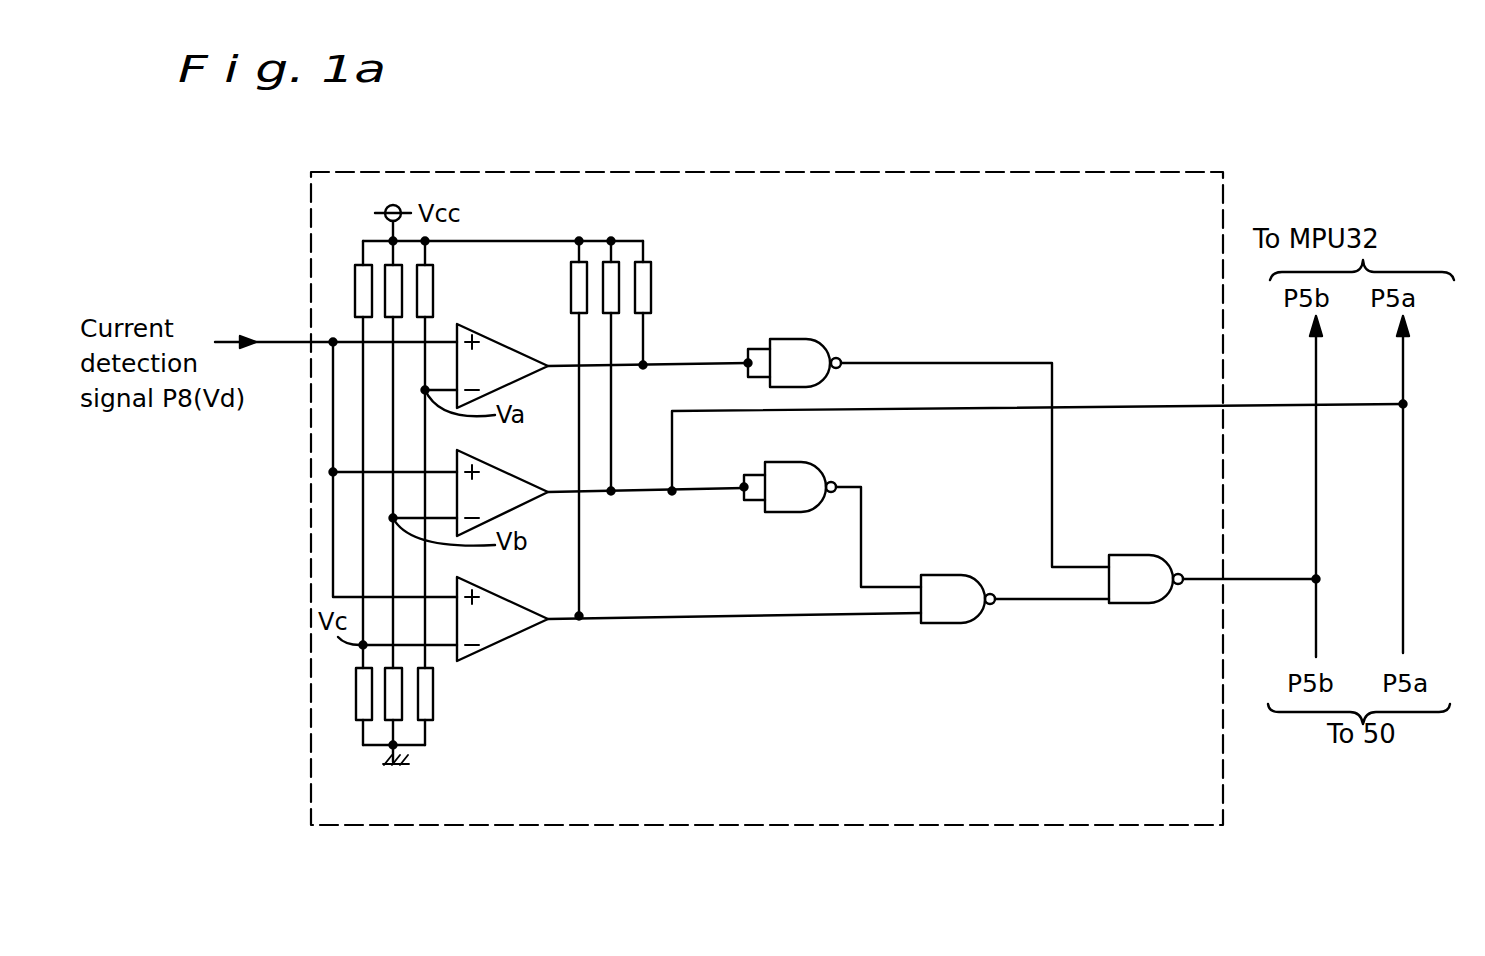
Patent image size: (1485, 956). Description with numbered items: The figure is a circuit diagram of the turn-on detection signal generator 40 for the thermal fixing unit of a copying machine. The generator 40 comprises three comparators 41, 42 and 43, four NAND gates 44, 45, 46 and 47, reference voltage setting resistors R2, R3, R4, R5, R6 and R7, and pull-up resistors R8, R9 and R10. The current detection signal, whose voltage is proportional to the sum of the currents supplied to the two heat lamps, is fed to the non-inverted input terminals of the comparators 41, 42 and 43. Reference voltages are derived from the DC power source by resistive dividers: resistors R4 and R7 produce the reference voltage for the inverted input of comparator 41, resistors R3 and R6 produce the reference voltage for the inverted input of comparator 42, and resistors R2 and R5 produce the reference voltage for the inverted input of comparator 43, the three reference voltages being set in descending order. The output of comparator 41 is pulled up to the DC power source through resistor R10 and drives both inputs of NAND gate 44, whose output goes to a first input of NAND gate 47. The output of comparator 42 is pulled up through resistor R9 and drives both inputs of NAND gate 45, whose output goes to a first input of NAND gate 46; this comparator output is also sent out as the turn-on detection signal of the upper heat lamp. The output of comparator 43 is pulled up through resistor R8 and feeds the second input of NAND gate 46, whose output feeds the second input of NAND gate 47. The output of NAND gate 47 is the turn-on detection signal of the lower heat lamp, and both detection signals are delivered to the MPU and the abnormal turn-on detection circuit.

The turn-on detection signal generator 40 is at (543, 172).
The reference voltage setting resistor R2 is at (355, 288).
The reference voltage setting resistor R3 is at (402, 290).
The reference voltage setting resistor R4 is at (433, 275).
The reference voltage setting resistor R5 is at (357, 716).
The reference voltage setting resistor R6 is at (402, 710).
The reference voltage setting resistor R7 is at (433, 695).
The pull-up resistor R8 is at (571, 288).
The pull-up resistor R9 is at (619, 290).
The pull-up resistor R10 is at (651, 270).
The comparator 41 is at (500, 343).
The comparator 42 is at (500, 471).
The comparator 43 is at (500, 597).
The NAND gate 44 is at (818, 339).
The NAND gate 45 is at (812, 462).
The NAND gate 46 is at (958, 574).
The NAND gate 47 is at (1148, 555).